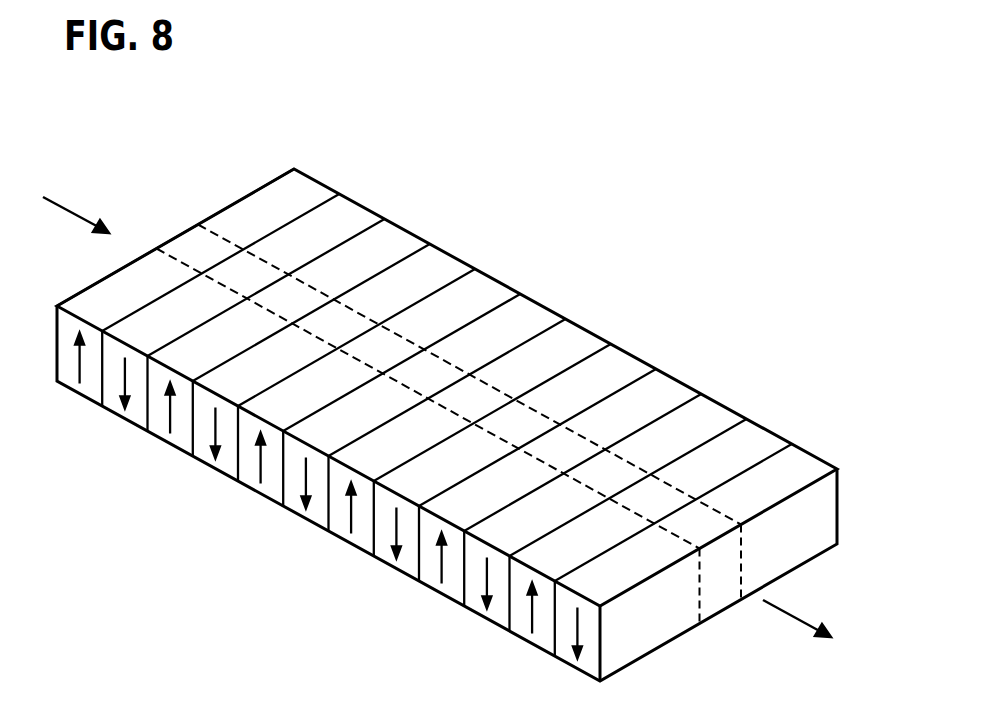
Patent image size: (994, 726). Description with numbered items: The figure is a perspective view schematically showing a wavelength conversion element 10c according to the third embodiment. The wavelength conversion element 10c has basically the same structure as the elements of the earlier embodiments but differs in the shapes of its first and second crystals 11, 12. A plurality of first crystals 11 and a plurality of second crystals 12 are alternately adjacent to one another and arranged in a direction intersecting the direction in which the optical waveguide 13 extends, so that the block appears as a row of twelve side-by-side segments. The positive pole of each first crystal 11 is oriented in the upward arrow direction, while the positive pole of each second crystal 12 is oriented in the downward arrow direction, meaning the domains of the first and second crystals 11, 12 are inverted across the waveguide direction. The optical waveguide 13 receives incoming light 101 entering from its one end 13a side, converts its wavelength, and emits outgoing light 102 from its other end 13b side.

The wavelength conversion element 10c is at (636, 222).
The first crystal 11 is at (300, 191).
The second crystal 12 is at (345, 216).
The optical waveguide 13 is at (247, 273).
The one end of the optical waveguide 13a is at (180, 233).
The other end of the optical waveguide 13b is at (718, 576).
The incoming light 101 is at (68, 224).
The outgoing light 102 is at (791, 626).